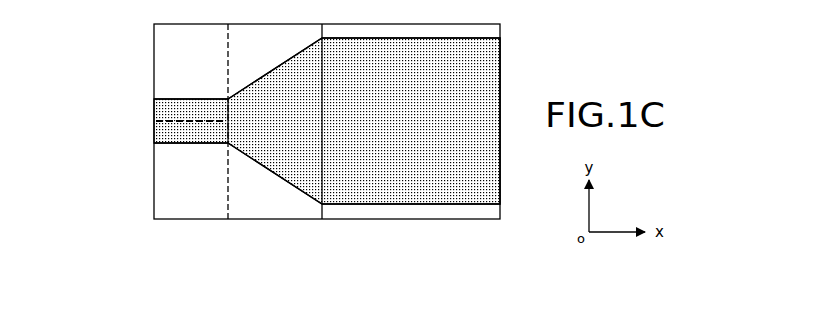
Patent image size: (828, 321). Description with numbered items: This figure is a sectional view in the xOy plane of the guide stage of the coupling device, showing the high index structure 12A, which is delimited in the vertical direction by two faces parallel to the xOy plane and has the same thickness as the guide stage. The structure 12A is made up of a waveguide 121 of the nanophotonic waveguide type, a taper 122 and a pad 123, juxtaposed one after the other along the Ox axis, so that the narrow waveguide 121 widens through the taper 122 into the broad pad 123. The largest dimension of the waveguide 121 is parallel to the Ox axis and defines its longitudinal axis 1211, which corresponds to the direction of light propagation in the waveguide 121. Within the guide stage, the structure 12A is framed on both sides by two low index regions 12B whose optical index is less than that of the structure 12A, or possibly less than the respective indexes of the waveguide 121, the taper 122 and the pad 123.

The structure 12A is at (364, 262).
The low index regions 12B is at (160, 42).
The waveguide 121 is at (197, 132).
The taper 122 is at (270, 153).
The pad 123 is at (358, 182).
The longitudinal axis 1211 is at (160, 121).